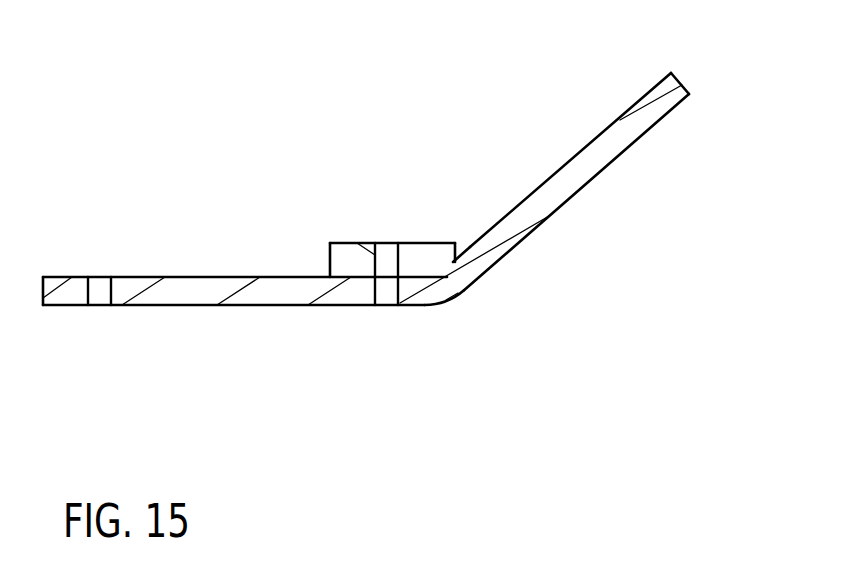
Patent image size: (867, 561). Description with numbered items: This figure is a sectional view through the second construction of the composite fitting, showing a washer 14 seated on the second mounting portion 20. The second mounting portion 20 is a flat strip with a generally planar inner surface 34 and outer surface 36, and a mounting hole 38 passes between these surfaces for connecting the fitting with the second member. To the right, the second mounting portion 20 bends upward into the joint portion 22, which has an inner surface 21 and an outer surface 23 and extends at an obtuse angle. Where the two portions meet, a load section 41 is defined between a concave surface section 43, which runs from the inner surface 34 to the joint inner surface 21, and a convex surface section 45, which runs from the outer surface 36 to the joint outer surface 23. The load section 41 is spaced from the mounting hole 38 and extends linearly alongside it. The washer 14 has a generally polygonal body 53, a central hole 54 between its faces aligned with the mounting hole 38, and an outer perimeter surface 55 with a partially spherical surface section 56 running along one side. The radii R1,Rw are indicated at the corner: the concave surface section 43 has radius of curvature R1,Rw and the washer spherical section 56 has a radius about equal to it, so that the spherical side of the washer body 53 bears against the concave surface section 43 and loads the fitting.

The washer 14 is at (391, 180).
The second mounting portion 20 is at (226, 314).
The inner surface of the joint portion 21 is at (595, 138).
The joint portion 22 is at (629, 92).
The outer surface of the joint portion 23 is at (592, 182).
The inner surface of the second mounting portion 34 is at (173, 277).
The outer surface of the second mounting portion 36 is at (137, 307).
The mounting hole 38 is at (89, 277).
The load section 41 is at (438, 306).
The concave surface section 43 is at (442, 245).
The convex surface section 45 is at (460, 297).
The polygonal washer body 53 is at (320, 237).
The central hole 54 is at (397, 307).
The outer perimeter surface 55 is at (321, 263).
The partially spherical surface section 56 is at (468, 267).
The radius of curvature R1 and washer radius RW R1,Rw is at (434, 260).